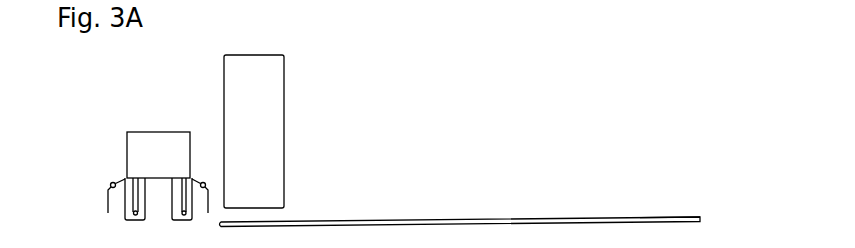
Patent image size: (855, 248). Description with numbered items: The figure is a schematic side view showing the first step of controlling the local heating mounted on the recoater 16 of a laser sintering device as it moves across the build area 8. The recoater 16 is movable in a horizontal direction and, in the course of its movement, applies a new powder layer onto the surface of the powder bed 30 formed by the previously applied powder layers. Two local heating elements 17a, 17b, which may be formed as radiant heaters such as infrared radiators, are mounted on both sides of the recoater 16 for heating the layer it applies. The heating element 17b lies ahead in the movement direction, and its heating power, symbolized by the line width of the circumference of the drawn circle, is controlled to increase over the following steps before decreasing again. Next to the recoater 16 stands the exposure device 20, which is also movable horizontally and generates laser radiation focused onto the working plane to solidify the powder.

The build area 8 is at (647, 217).
The recoater 16 is at (140, 138).
The heating element 17a is at (111, 183).
The heating element 17b is at (200, 180).
The exposure device 20 is at (268, 82).
The powder bed 30 is at (700, 218).